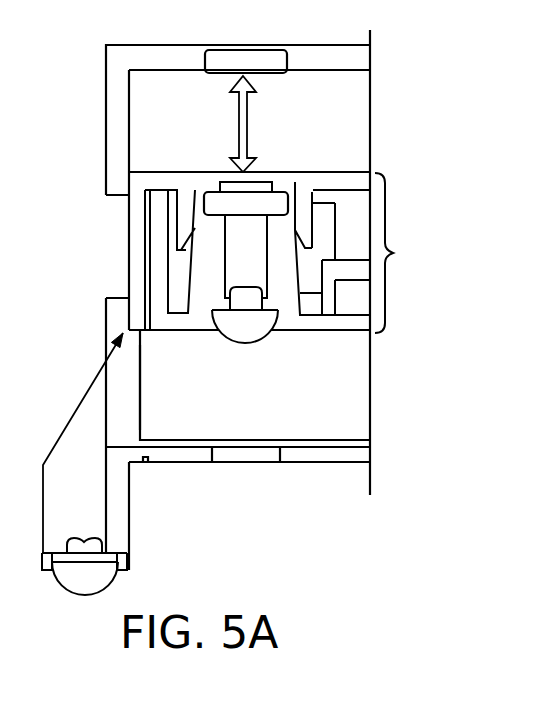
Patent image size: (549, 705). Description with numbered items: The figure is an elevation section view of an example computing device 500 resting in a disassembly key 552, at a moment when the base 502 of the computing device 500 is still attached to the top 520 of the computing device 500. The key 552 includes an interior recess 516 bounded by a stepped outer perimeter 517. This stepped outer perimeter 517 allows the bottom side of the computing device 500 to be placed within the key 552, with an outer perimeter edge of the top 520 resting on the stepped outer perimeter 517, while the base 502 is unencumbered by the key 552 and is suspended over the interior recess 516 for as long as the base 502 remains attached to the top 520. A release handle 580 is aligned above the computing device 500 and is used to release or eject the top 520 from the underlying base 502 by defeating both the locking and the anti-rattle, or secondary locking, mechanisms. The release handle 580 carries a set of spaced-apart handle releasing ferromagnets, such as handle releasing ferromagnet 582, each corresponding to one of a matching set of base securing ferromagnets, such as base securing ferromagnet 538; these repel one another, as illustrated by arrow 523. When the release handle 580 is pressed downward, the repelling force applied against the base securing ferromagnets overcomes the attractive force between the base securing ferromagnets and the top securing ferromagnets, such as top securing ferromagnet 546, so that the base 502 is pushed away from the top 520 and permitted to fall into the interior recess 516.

The computing device 500 is at (446, 265).
The base 502 is at (363, 325).
The interior recess 516 is at (308, 399).
The stepped outer perimeter 517 is at (107, 347).
The top 520 is at (350, 183).
The arrow 523 is at (243, 127).
The base securing ferromagnet 538 is at (248, 203).
The top securing ferromagnet 546 is at (237, 190).
The disassembly key 552 is at (133, 422).
The release handle 580 is at (355, 57).
The handle releasing ferromagnet 582 is at (258, 68).